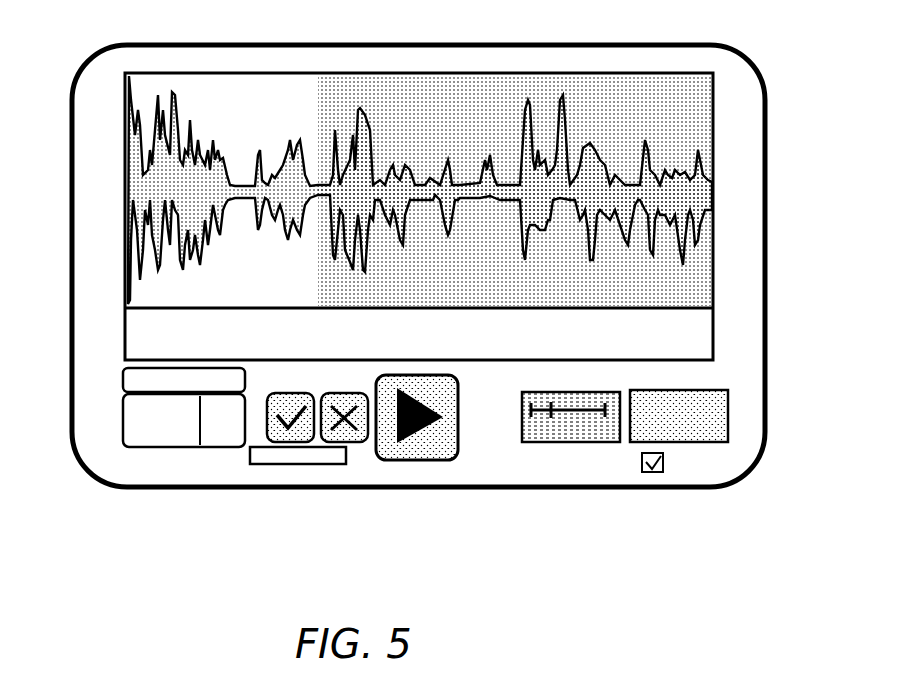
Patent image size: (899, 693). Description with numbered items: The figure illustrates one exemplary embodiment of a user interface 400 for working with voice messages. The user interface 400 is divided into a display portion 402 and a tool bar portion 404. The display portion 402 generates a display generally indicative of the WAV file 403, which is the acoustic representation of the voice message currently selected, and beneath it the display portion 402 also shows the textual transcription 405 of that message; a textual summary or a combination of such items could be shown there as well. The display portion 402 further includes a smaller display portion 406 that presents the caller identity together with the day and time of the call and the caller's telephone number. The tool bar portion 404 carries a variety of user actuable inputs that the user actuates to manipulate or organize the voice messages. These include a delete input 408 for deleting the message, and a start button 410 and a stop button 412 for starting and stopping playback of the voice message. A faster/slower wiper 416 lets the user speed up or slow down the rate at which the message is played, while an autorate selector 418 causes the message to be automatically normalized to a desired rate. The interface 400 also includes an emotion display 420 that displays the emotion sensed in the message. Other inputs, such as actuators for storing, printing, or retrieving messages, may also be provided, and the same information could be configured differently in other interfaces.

The user interface 400 is at (181, 574).
The display portion 402 is at (740, 124).
The WAV file 403 is at (218, 157).
The tool bar portion 404 is at (748, 416).
The textual transcription 405 is at (685, 333).
The display portion 406 is at (123, 447).
The delete input 408 is at (265, 433).
The start button 410 is at (453, 457).
The stop button 412 is at (363, 442).
The faster/slower wiper 416 is at (520, 450).
The autorate selector 418 is at (653, 472).
The emotion display 420 is at (327, 464).